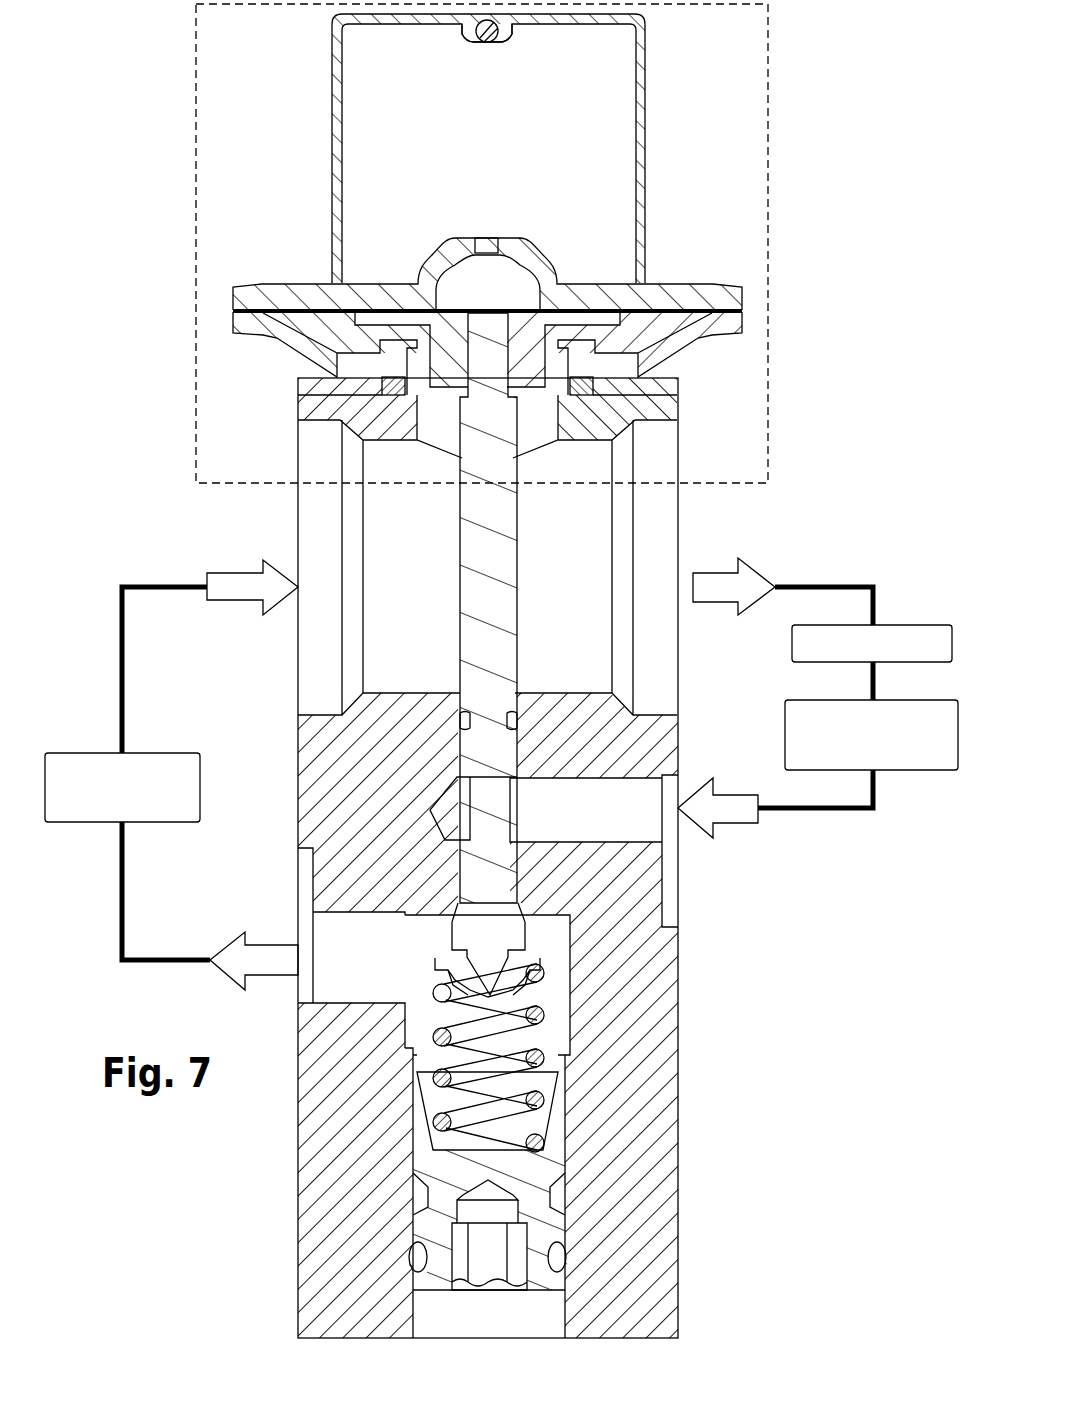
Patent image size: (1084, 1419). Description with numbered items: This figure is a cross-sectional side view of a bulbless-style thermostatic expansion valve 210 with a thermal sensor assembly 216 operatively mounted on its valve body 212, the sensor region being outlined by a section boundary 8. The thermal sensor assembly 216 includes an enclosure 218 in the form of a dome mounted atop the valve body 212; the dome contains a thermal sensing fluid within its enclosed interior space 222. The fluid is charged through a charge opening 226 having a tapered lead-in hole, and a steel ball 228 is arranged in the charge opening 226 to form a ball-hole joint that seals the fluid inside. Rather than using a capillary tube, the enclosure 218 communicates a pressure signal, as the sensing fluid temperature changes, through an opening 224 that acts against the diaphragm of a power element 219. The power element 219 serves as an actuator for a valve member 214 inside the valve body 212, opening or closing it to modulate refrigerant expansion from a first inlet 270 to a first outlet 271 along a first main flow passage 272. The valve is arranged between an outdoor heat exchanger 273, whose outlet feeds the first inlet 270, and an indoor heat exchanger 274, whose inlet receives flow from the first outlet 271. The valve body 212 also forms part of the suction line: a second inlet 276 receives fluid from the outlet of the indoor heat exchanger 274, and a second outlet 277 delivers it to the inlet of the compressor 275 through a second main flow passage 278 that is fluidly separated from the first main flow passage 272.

The thermostatic expansion valve 210 is at (150, 26).
The power element assembly 8 is at (768, 440).
The thermal sensor assembly 216 is at (660, 41).
The enclosure 218 is at (652, 118).
The enclosed interior space 222 is at (425, 148).
The opening 224 is at (489, 245).
The charge opening 226 is at (492, 48).
The ball 228 is at (490, 32).
The power element 219 is at (665, 345).
The valve body 212 is at (625, 1078).
The valve member 214 is at (500, 935).
The first inlet 270 is at (662, 858).
The first outlet 271 is at (302, 982).
The first main flow passage 272 is at (583, 796).
The outdoor heat exchanger 273 is at (912, 770).
The indoor heat exchanger 274 is at (75, 822).
The compressor 275 is at (905, 625).
The second inlet 276 is at (298, 548).
The second outlet 277 is at (678, 560).
The second main flow passage 278 is at (580, 553).